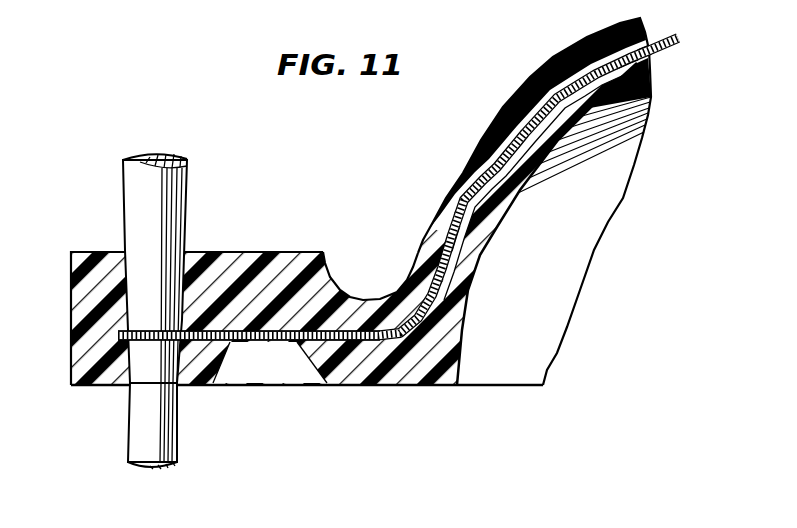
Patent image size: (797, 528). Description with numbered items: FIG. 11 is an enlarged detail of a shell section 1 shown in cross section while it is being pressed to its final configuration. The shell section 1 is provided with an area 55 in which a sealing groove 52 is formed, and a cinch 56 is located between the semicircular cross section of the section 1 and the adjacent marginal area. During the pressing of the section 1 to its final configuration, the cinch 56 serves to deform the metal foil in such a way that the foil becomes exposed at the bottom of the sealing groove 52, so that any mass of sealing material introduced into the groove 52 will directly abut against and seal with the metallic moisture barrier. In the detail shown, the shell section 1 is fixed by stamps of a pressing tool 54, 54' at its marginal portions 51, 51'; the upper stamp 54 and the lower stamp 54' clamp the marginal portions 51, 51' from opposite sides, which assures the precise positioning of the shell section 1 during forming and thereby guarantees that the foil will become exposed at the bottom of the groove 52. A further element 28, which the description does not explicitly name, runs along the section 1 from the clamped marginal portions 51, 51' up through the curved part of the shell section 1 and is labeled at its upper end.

The shell section 1 is at (510, 111).
The reinforcing strip 28 is at (678, 38).
The marginal portion 51 is at (198, 314).
The marginal portion 51' is at (198, 372).
The sealing groove 52 is at (267, 371).
The stamp of pressing tool 54 is at (130, 268).
The stamp of pressing tool 54' is at (125, 416).
The area formed with sealing groove 55 is at (238, 251).
The cinch 56 is at (363, 297).